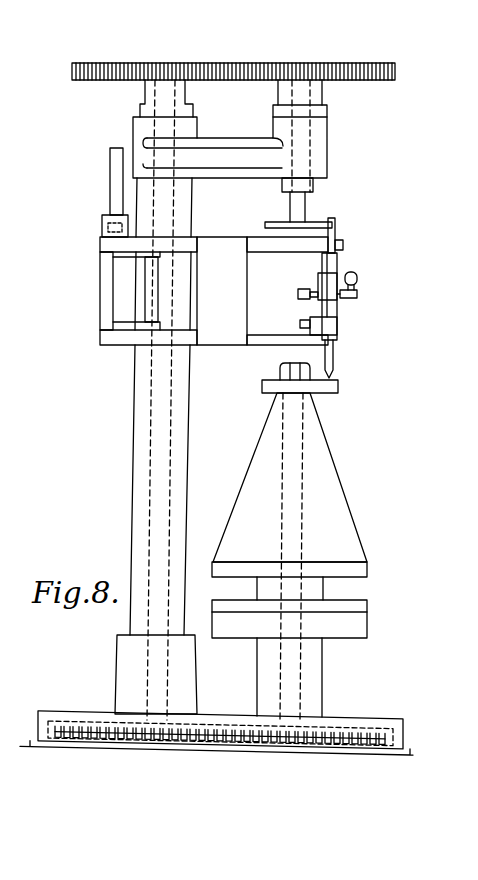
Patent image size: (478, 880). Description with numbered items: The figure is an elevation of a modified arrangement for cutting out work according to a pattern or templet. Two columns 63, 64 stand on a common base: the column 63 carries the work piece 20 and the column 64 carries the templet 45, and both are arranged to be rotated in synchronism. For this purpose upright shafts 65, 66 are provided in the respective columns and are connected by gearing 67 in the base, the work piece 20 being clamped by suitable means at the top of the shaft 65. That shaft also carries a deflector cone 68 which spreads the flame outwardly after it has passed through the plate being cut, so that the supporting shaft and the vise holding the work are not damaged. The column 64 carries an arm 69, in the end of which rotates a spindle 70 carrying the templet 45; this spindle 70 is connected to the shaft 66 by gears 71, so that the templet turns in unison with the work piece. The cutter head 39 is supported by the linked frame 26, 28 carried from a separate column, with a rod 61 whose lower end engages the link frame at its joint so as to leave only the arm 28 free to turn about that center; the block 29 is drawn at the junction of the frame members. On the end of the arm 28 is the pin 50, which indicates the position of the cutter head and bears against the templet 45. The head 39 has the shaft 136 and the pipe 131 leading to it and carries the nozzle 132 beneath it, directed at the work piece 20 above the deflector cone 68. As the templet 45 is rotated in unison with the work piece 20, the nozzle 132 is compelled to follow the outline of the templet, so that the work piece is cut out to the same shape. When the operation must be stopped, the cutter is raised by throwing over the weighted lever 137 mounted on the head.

The gears 71 is at (104, 78).
The arm 69 is at (257, 160).
The spindle 70 is at (305, 202).
The pin 50 is at (332, 224).
The templet 45 is at (340, 228).
The rod 61 is at (112, 212).
The arm of linked frame 28 is at (258, 240).
The central block 29 is at (222, 291).
The linked frame member 26 is at (120, 297).
The head 39 is at (333, 268).
The shaft 136 is at (300, 293).
The pipe 131 is at (300, 325).
The weighted lever 137 is at (355, 285).
The nozzle 132 is at (334, 360).
The work piece 20 is at (268, 388).
The deflector cone 68 is at (323, 474).
The upright shaft 65 is at (295, 518).
The column 63 is at (310, 678).
The column 64 is at (138, 497).
The upright shaft 66 is at (157, 533).
The gearing 67 is at (175, 674).